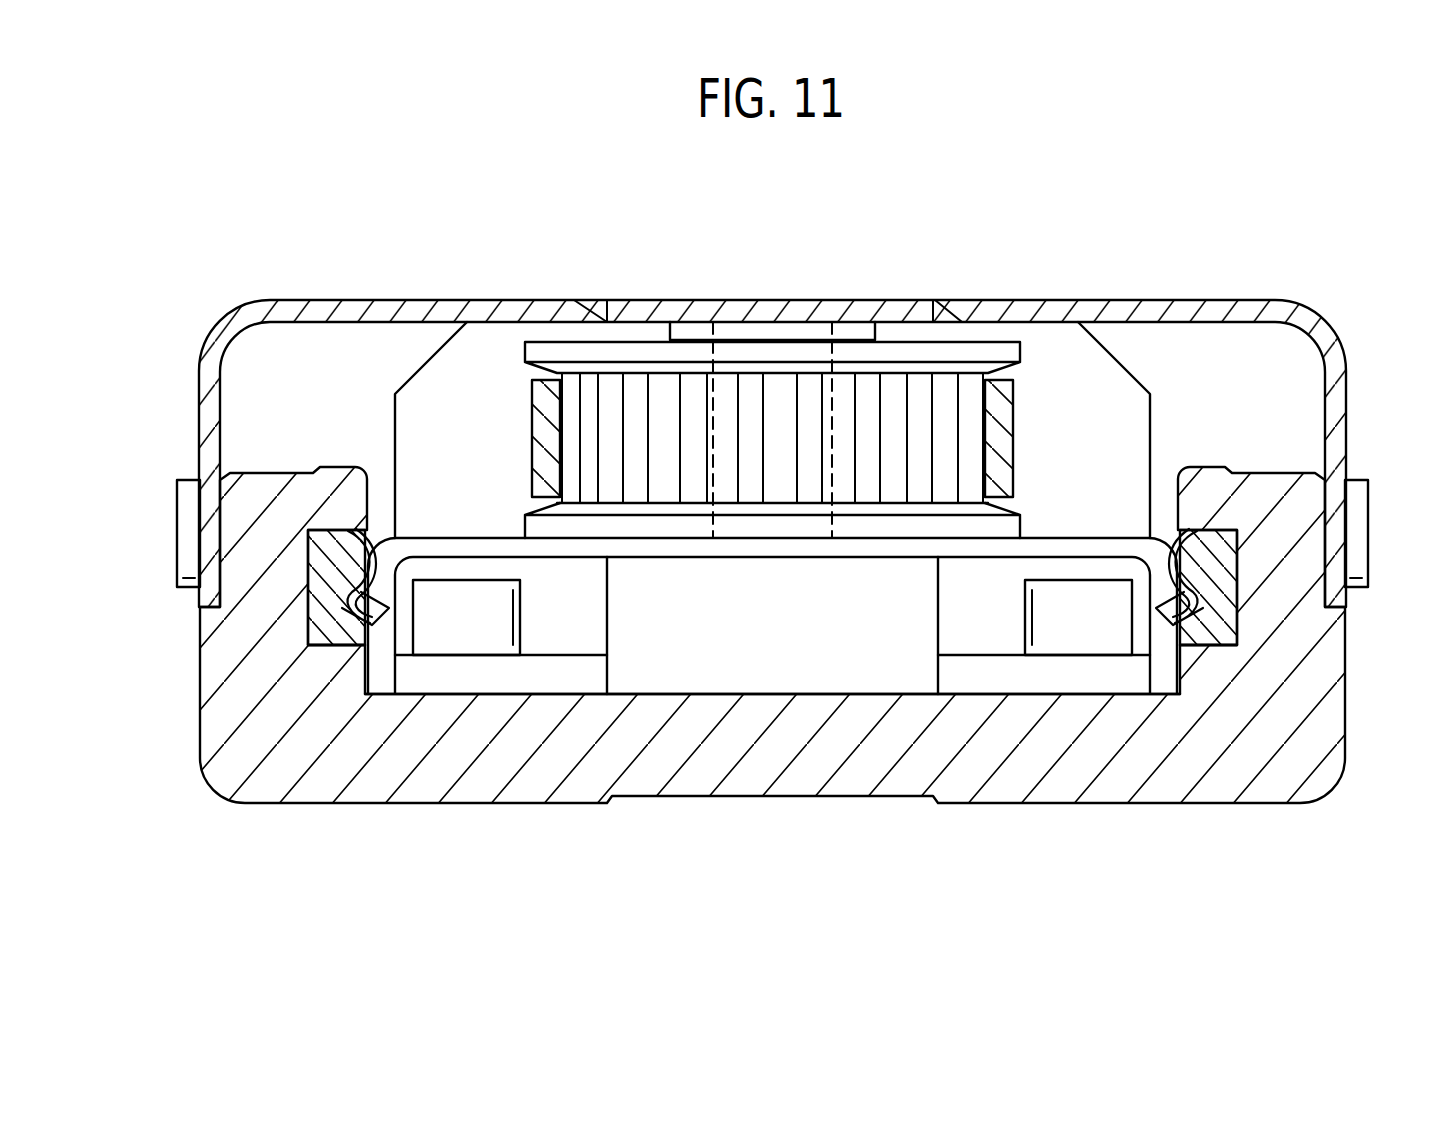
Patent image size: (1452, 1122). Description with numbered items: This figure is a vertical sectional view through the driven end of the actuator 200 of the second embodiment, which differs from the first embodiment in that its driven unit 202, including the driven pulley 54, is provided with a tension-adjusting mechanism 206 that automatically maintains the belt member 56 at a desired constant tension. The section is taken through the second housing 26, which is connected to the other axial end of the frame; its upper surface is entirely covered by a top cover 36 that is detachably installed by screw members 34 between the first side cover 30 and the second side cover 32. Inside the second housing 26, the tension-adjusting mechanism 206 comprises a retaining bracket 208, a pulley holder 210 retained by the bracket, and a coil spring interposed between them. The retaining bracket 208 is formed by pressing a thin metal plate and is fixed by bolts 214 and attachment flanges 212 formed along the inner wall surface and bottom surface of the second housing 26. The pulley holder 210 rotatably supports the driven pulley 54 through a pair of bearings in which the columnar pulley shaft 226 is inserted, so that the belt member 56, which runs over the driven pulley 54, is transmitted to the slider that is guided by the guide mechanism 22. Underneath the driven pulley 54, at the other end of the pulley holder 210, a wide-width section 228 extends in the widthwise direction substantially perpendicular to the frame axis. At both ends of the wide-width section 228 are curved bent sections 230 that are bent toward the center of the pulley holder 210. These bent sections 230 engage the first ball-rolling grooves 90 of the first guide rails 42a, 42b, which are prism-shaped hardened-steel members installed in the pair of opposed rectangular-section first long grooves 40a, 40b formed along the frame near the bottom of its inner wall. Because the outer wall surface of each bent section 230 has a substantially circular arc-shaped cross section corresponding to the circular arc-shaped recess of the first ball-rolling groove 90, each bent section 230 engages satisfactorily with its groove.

The actuator 200 is at (1042, 165).
The driven unit 202 is at (780, 408).
The first side cover 30 is at (228, 325).
The second side cover 32 is at (1320, 337).
The screw member 34 is at (190, 548).
The top cover 36 is at (688, 318).
The pulley shaft 226 is at (778, 340).
The pulley holder 210 is at (811, 381).
The driven pulley 54 is at (1010, 353).
The belt member 56 is at (1003, 423).
The tension-adjusting mechanism 206 is at (425, 455).
The guide mechanism 22 is at (772, 535).
The first ball-rolling groove 90 is at (772, 535).
The first long groove 40a is at (308, 628).
The first long groove 40b is at (1237, 628).
The first guide rail 42a is at (333, 647).
The first guide rail 42b is at (1213, 647).
The wide-width section 228 is at (473, 547).
The bent section 230 is at (370, 640).
The attachment flange 212 is at (465, 680).
The bolt 214 is at (500, 612).
The retaining bracket 208 is at (772, 717).
The second housing 26 is at (757, 770).